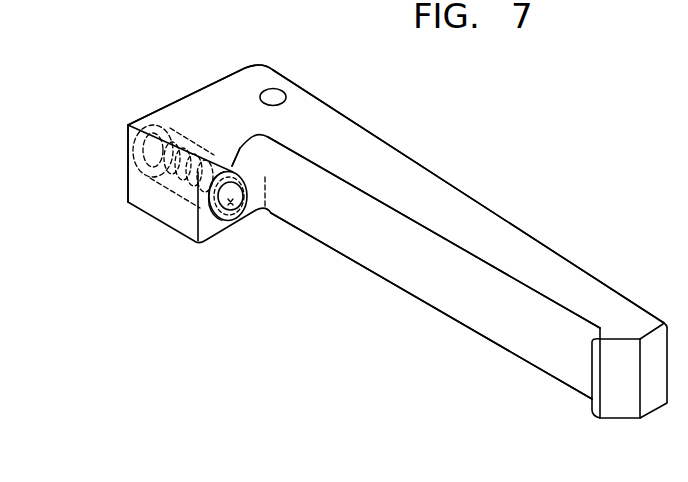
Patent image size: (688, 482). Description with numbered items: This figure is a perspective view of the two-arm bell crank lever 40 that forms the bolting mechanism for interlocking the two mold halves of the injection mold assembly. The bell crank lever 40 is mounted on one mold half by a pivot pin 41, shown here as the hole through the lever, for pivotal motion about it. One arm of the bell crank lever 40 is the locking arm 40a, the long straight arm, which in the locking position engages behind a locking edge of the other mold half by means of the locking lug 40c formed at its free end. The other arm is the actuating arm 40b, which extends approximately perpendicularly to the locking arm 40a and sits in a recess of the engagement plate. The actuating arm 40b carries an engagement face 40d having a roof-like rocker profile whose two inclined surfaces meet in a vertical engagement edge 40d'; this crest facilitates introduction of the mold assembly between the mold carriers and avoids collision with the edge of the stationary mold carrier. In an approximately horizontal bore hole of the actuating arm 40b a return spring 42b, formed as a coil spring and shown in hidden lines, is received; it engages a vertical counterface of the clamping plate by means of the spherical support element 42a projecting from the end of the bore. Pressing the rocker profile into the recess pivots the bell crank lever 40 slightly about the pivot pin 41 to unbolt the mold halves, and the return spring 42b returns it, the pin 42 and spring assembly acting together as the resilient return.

The two-arm bell crank lever 40 is at (430, 173).
The locking arm 40a is at (513, 247).
The actuating arm 40b is at (233, 100).
The locking lug 40c is at (598, 333).
The engagement face 40d is at (219, 120).
The engagement edge 40d' is at (213, 103).
The pivot pin 41 is at (273, 97).
The pin 42 is at (248, 173).
The spherical support element 42a is at (232, 205).
The return spring 42b is at (161, 180).